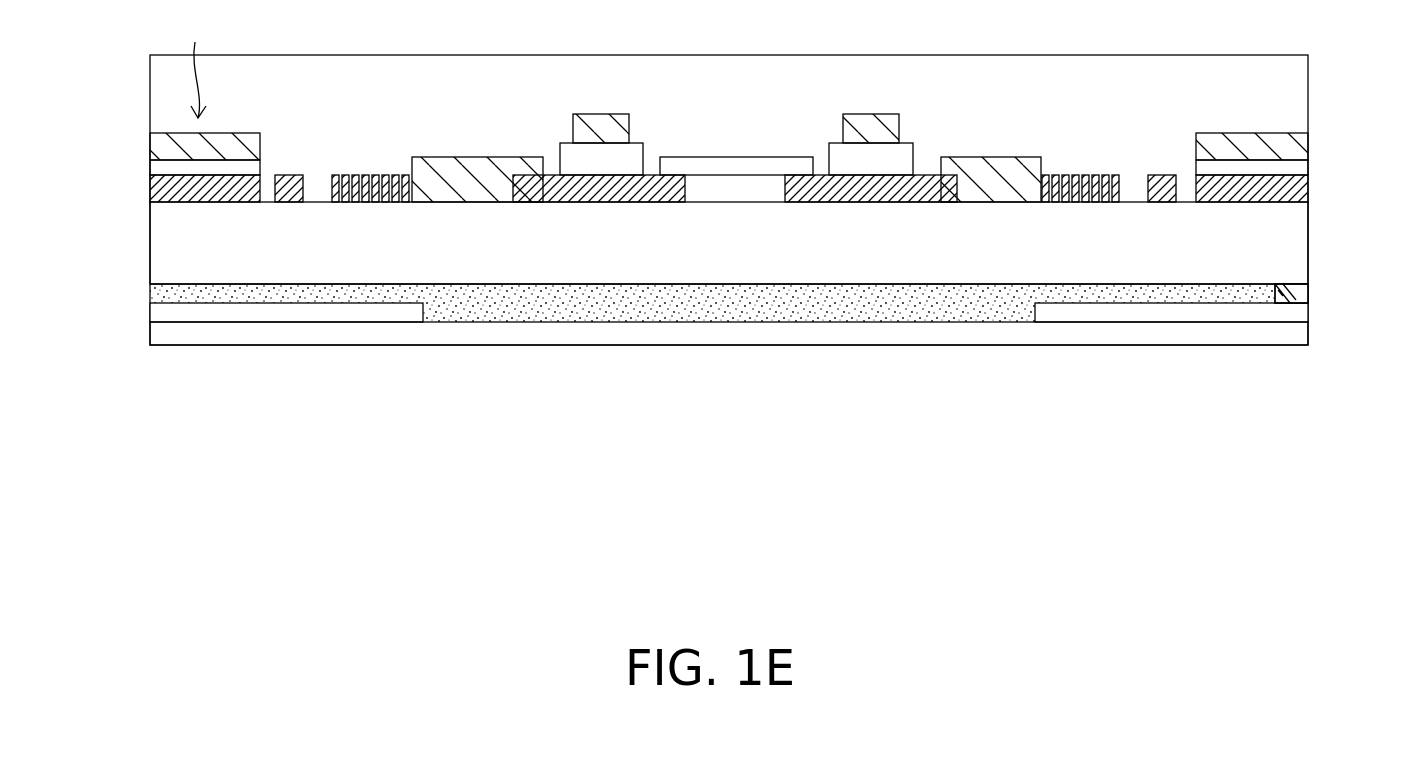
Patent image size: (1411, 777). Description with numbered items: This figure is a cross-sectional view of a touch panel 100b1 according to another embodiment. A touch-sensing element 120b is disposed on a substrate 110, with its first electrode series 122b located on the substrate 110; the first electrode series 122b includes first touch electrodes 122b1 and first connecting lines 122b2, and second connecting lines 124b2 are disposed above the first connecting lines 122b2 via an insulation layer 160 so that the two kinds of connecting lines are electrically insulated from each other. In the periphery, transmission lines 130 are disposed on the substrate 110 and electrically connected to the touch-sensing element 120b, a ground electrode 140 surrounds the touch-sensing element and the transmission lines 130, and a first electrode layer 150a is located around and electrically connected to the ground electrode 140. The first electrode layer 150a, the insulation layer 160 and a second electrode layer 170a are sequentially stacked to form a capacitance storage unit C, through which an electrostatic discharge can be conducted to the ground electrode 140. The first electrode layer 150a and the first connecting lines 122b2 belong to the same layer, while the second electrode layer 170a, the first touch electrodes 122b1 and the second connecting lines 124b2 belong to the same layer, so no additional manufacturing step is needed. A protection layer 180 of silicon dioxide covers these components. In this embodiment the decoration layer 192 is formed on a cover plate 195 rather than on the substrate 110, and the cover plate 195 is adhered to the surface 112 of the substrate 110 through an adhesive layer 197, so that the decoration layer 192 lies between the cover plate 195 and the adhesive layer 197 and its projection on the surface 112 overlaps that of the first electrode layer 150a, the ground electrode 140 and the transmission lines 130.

The protection layer 180 is at (160, 82).
The second electrode layer 170a is at (160, 147).
The insulation layer 160 is at (163, 170).
The first electrode layer 150a is at (165, 188).
The substrate 110 is at (168, 237).
The ground electrode 140 is at (287, 203).
The transmission lines 130 is at (349, 203).
The first touch electrodes 122b1 is at (458, 203).
The first connecting lines 122b2 is at (573, 203).
The first electrode series 122b is at (595, 411).
The second connecting lines 124b2 is at (608, 127).
The adhesive layer 197 is at (1000, 305).
The decoration layer 192 is at (158, 312).
The cover plate 195 is at (1300, 335).
The surface 112 is at (1300, 295).
The touch-sensing element 120b is at (738, 453).
The touch panel 100b1 is at (1197, 395).
The capacitance storage unit C is at (194, 64).